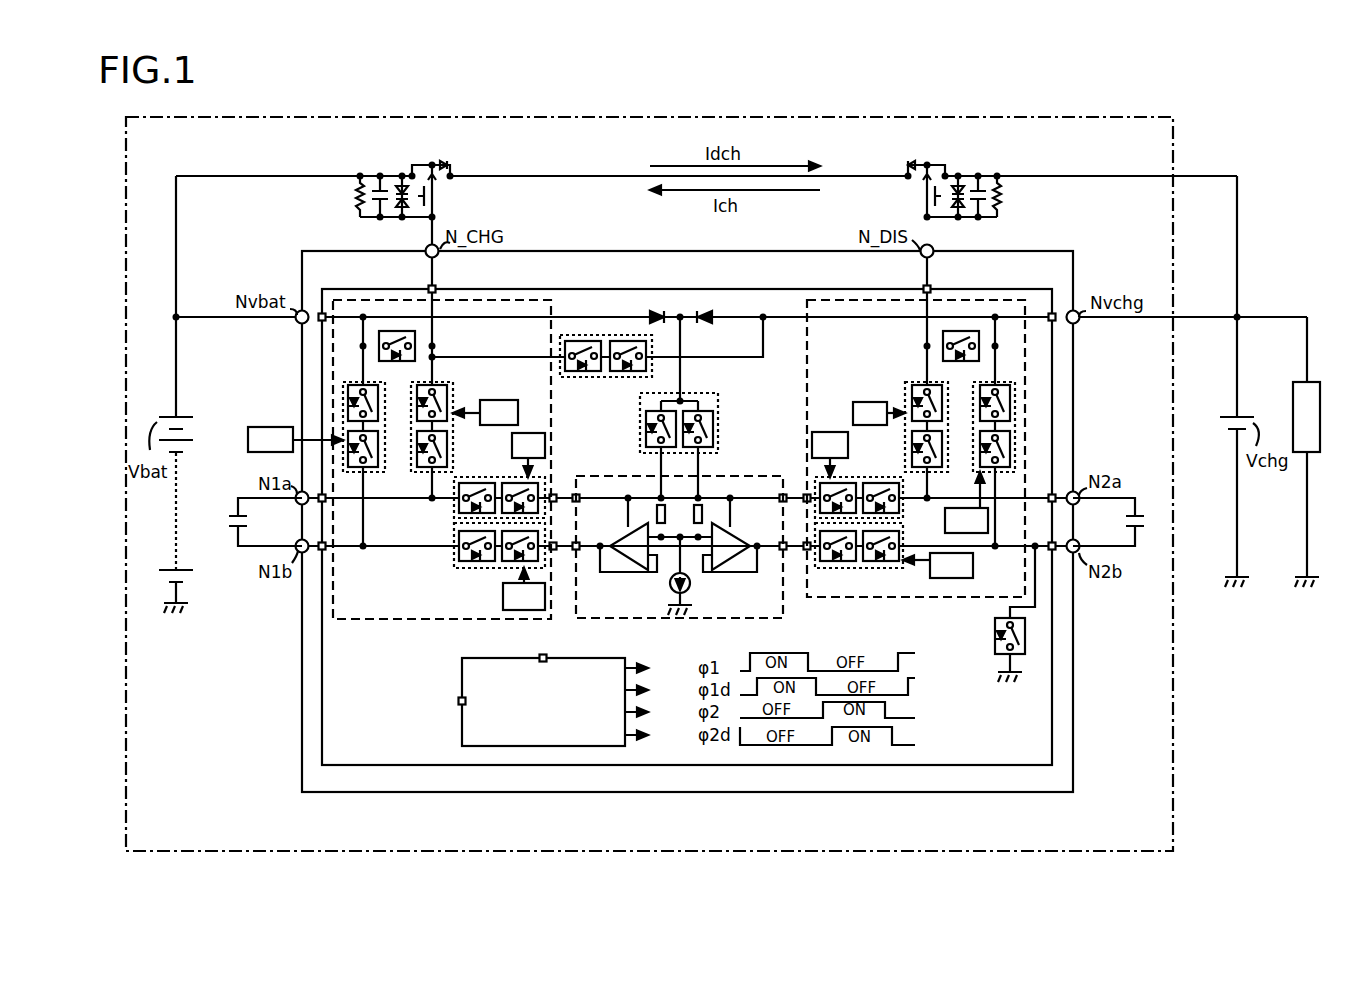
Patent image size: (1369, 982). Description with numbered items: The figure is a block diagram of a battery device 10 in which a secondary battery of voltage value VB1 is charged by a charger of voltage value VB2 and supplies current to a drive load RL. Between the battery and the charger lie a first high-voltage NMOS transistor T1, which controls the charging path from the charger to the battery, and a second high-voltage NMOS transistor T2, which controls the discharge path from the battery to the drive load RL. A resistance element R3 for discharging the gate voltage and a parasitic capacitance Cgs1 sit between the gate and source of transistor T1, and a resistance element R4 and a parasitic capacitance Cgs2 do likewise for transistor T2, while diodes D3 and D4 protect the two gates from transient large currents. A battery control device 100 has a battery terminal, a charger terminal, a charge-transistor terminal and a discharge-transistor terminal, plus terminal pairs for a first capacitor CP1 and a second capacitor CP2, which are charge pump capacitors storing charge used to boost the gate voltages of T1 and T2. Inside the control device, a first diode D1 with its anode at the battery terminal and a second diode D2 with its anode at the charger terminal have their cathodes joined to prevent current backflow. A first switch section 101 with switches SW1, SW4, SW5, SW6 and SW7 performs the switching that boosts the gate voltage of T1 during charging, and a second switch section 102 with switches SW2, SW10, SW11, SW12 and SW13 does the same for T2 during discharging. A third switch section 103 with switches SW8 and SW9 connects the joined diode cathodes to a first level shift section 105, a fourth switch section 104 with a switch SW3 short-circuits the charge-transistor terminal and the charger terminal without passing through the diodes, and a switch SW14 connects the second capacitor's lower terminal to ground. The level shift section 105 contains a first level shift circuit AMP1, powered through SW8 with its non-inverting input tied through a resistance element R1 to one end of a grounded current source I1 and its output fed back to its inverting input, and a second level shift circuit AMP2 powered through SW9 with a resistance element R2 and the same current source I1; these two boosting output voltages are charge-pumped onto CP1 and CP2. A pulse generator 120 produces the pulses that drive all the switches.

The battery device 10 is at (837, 117).
The battery control device 100 is at (808, 792).
The first switch section 101 is at (399, 471).
The second switch section 102 is at (962, 430).
The third switch section 103 is at (687, 423).
The fourth switch section 104 is at (606, 340).
The first level shift section 105 is at (651, 564).
The pulse generator 120 is at (462, 727).
The switch SW1 is at (395, 330).
The switch SW2 is at (960, 330).
The switch SW3 is at (600, 378).
The switch SW4 is at (345, 381).
The switch SW5 is at (454, 394).
The switch SW6 is at (478, 477).
The switch SW7 is at (481, 569).
The switch SW8 is at (640, 440).
The switch SW9 is at (718, 440).
The switch SW10 is at (1008, 382).
The switch SW11 is at (905, 392).
The switch SW12 is at (877, 477).
The switch SW13 is at (837, 569).
The switch SW14 is at (995, 625).
The first high-voltage NMOS transistor T1 is at (441, 204).
The second high-voltage NMOS transistor T2 is at (921, 204).
The first diode D1 is at (649, 312).
The second diode D2 is at (713, 312).
The diode D3 is at (403, 183).
The diode D4 is at (958, 183).
The resistance element R1 is at (649, 515).
The resistance element R2 is at (711, 515).
The resistance element R3 is at (357, 205).
The resistance element R4 is at (1002, 205).
The parasitic capacitance Cgs1 is at (380, 186).
The parasitic capacitance Cgs2 is at (978, 186).
The first level shift circuit AMP1 is at (628, 573).
The second level shift circuit AMP2 is at (732, 573).
The current source I1 is at (690, 589).
The first capacitor CP1 is at (232, 538).
The second capacitor CP2 is at (1140, 546).
The voltage value of the secondary battery VB1 is at (194, 505).
The voltage value of the charger VB2 is at (1217, 491).
The drive load RL is at (1293, 398).